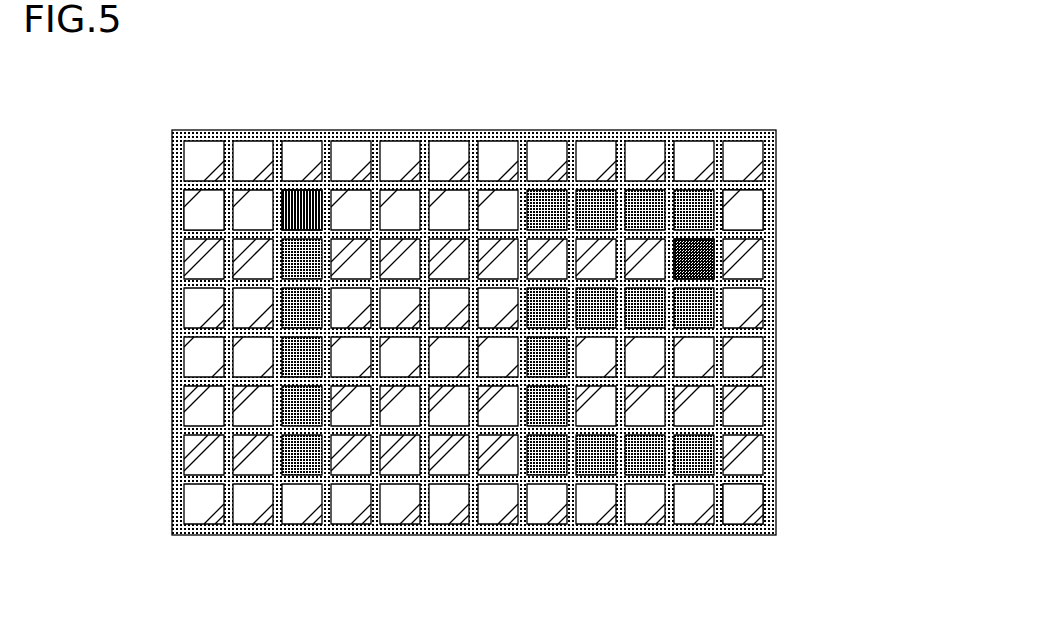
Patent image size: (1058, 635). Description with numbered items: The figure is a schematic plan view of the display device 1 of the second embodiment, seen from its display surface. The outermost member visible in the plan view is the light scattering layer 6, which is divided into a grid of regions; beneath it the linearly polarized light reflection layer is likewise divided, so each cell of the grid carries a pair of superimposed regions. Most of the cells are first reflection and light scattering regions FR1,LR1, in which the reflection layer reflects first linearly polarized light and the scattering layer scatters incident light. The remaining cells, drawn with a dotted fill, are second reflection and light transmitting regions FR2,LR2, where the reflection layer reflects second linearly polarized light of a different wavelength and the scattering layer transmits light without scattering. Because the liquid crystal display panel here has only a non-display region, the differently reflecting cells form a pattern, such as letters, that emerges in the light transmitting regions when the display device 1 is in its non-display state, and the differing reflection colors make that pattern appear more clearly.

The display device 1 is at (162, 113).
The light scattering layer 6 is at (768, 495).
The first reflection region and light scattering region FR1,LR1 is at (204, 214).
The second reflection region and light transmitting region FR2,LR2 is at (297, 193).